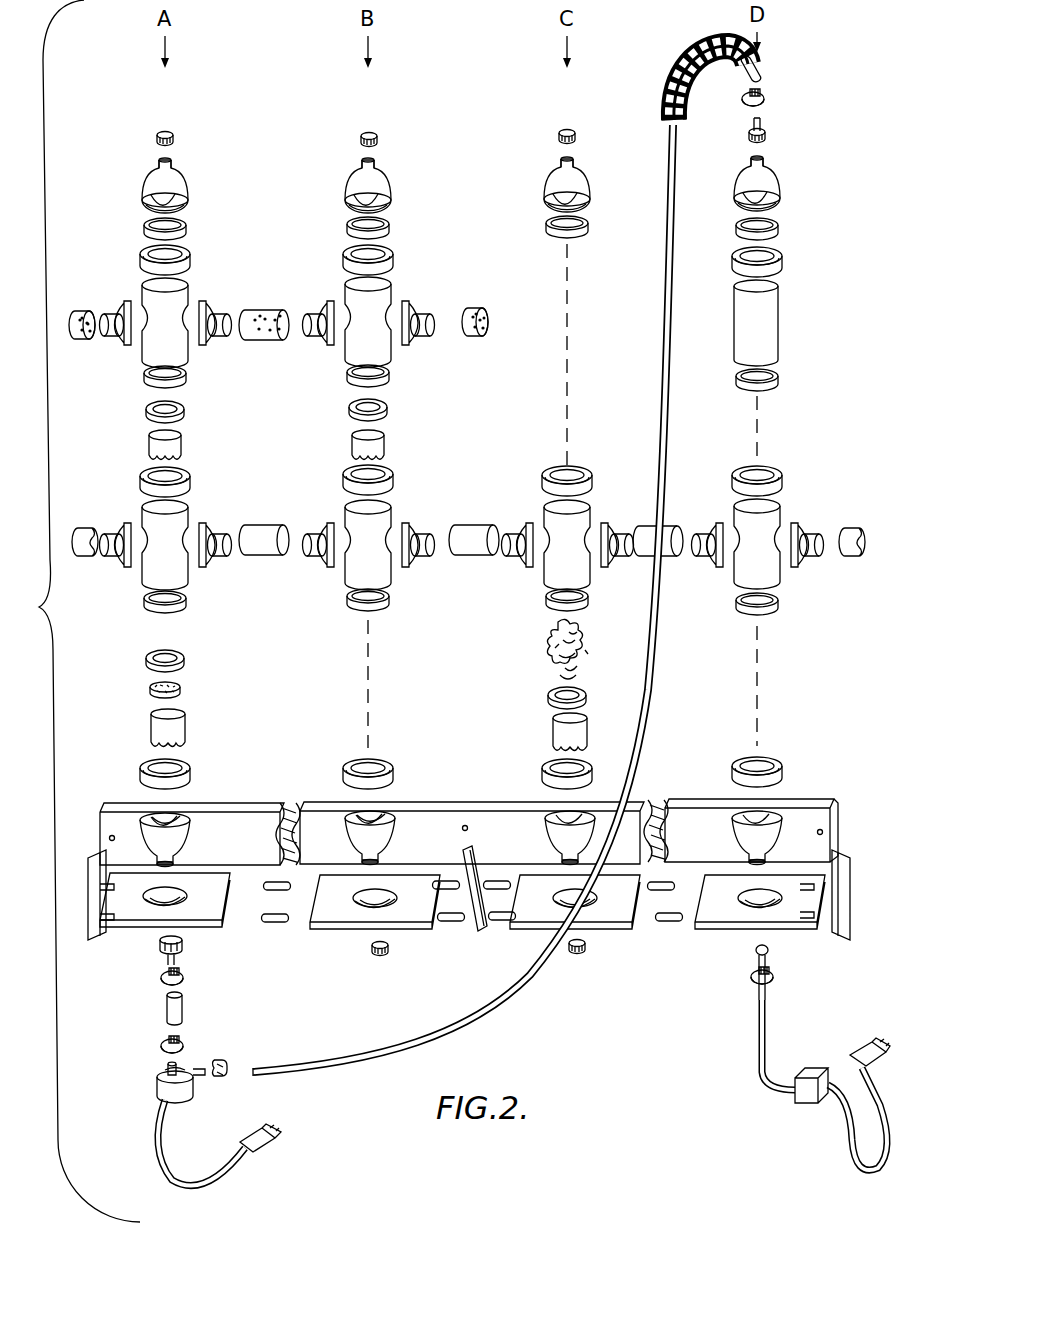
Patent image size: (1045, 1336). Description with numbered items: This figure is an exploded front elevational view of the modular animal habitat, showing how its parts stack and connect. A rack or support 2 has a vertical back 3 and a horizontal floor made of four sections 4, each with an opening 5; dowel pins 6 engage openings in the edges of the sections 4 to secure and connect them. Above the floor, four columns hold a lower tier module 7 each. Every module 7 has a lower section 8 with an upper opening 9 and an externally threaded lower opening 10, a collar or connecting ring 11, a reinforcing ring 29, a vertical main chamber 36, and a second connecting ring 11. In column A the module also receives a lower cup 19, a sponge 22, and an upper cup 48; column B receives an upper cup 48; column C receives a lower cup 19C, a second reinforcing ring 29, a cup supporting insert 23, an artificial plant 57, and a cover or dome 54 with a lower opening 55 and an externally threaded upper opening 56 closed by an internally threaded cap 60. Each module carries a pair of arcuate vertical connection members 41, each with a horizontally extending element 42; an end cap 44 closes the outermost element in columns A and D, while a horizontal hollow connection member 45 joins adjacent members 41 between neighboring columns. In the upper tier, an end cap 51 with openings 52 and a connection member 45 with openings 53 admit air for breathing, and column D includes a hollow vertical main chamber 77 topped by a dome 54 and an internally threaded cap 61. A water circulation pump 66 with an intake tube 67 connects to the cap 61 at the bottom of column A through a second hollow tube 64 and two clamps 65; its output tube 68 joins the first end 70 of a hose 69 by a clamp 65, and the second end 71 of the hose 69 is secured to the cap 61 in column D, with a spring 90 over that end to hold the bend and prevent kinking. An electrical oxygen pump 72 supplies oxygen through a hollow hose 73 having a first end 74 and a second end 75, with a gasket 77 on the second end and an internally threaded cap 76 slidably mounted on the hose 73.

The rack or support 2 is at (130, 936).
The vertical back 3 is at (259, 838).
The floor section 4 is at (212, 908).
The opening 5 is at (194, 905).
The dowel pin 6 is at (278, 922).
The lower tier module 7 is at (122, 688).
The lower section 8 is at (192, 838).
The upper opening 9 is at (170, 822).
The externally threaded lower opening 10 is at (178, 862).
The collar or connecting ring 11 is at (191, 262).
The lower cup 19 is at (152, 738).
The lower cup 19C is at (553, 738).
The sponge 22 is at (183, 690).
The cup supporting insert 23 is at (146, 414).
The reinforcing ring 29 is at (188, 228).
The vertical main chamber 36 is at (172, 345).
The vertical connection member 41 is at (128, 302).
The horizontally extending element 42 is at (118, 532).
The end cap 44 is at (86, 528).
The horizontal hollow connection member 45 is at (270, 345).
The upper cup 48 is at (182, 450).
The end cap 51 is at (86, 345).
The openings 52 is at (85, 310).
The openings 53 is at (280, 312).
The cover or dome 54 is at (190, 186).
The lower opening 55 is at (148, 210).
The externally threaded upper opening 56 is at (172, 165).
The artificial plant 57 is at (555, 650).
The internally threaded cap 60 is at (160, 130).
The internally threaded cap 61 is at (160, 950).
The second hollow tube 64 is at (166, 1010).
The clamp 65 is at (184, 977).
The water circulation pump 66 is at (156, 1086).
The intake tube 67 is at (166, 1066).
The output tube 68 is at (224, 1054).
The hose 69 is at (458, 1036).
The first end 70 is at (278, 1064).
The second end 71 is at (758, 64).
The oxygen pump 72 is at (802, 1108).
The hollow hose 73 is at (768, 1035).
The first end 74 is at (758, 1092).
The second end 75 is at (772, 967).
The internally threaded cap 76 is at (755, 985).
The hollow vertical main chamber 77 is at (780, 334).
The spring 90 is at (700, 50).